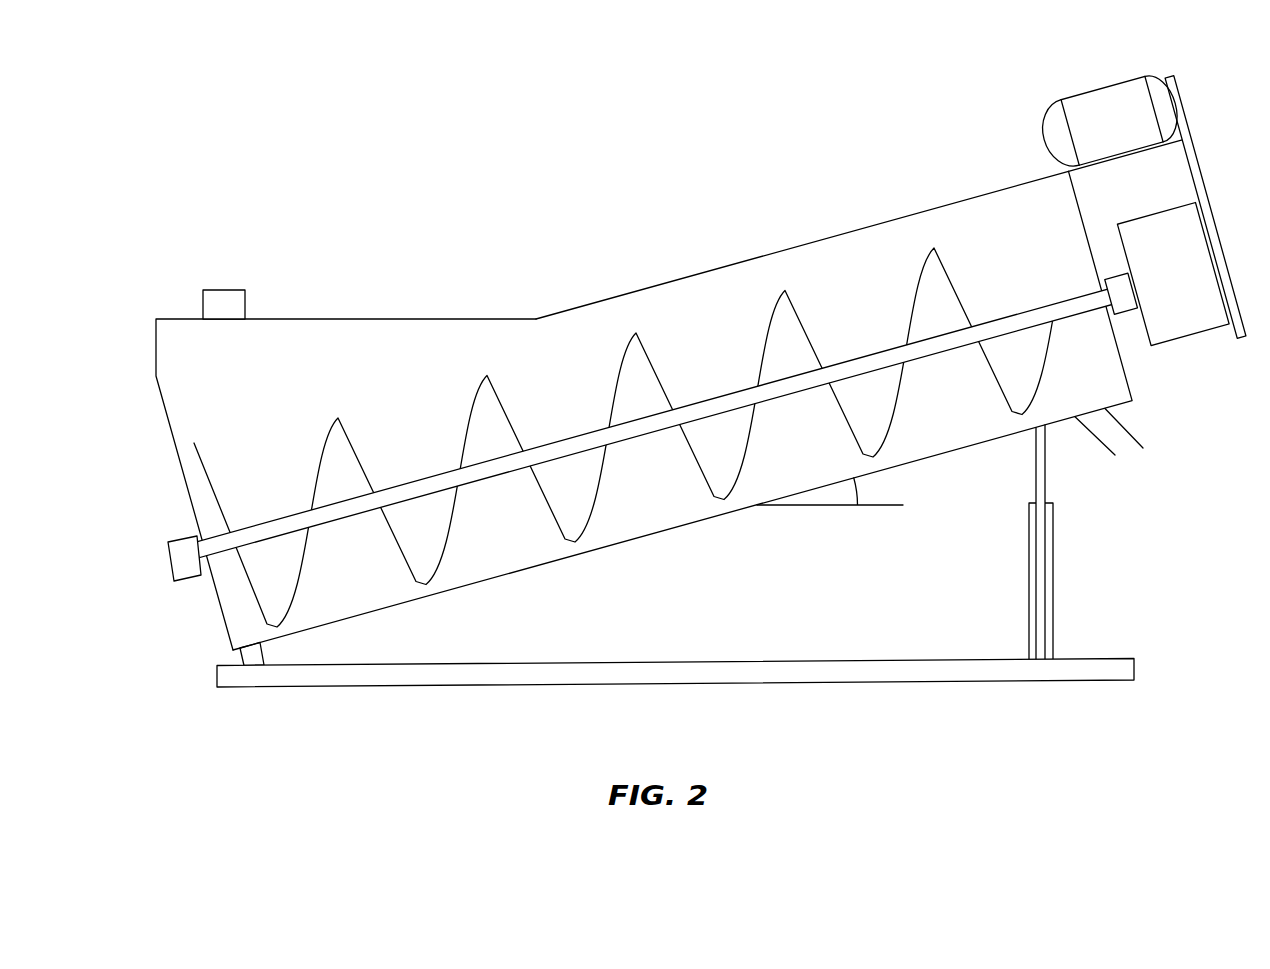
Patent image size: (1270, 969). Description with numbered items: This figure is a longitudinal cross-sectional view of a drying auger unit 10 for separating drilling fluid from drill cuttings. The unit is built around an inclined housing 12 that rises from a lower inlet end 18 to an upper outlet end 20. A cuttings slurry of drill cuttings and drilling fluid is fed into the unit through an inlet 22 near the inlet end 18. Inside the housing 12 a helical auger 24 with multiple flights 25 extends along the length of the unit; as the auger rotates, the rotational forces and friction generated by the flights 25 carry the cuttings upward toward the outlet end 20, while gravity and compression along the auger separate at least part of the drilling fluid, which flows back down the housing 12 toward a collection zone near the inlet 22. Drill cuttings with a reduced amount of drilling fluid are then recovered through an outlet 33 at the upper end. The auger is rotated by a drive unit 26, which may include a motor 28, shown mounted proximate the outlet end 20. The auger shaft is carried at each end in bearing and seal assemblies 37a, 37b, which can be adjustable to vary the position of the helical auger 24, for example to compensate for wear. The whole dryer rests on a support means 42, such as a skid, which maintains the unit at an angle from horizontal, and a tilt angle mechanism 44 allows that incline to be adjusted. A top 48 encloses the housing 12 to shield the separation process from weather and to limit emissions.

The drying auger unit 10 is at (543, 182).
The inclined housing 12 is at (627, 277).
The inlet end 18 is at (143, 430).
The outlet end 20 is at (1032, 165).
The inlet 22 is at (223, 290).
The helical auger 24 is at (455, 383).
The flights 25 is at (570, 530).
The drive unit 26 is at (1194, 288).
The motor 28 is at (1125, 135).
The outlet 33 is at (1093, 433).
The bearing and seal assembly 37a is at (168, 560).
The bearing and seal assembly 37b is at (1128, 315).
The support means 42 is at (497, 687).
The tilt angle mechanism 44 is at (1037, 573).
The top 48 is at (828, 240).